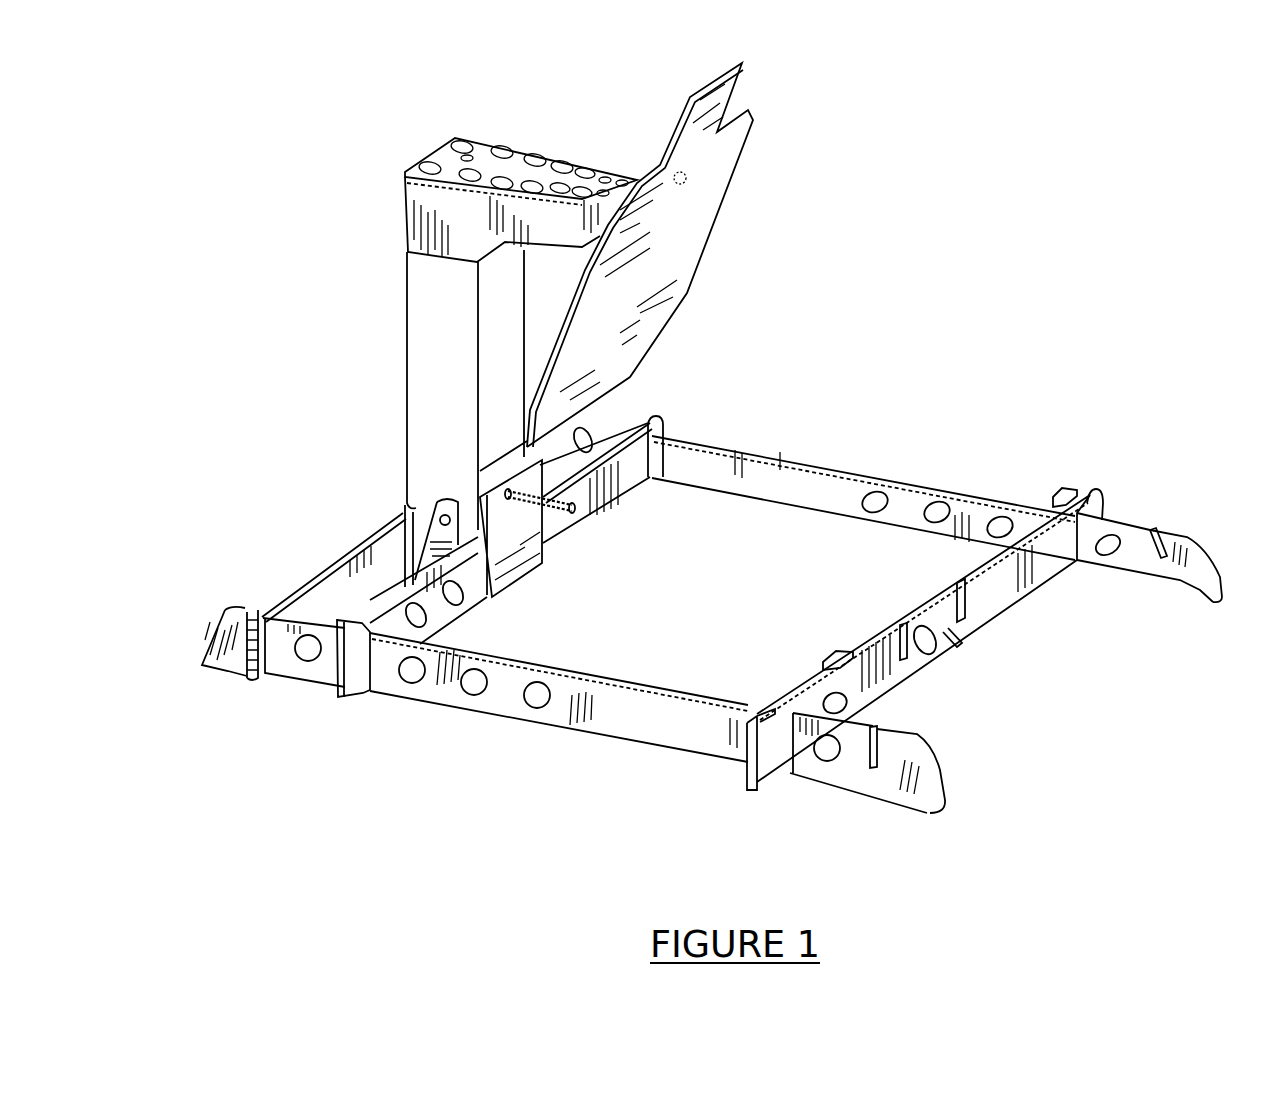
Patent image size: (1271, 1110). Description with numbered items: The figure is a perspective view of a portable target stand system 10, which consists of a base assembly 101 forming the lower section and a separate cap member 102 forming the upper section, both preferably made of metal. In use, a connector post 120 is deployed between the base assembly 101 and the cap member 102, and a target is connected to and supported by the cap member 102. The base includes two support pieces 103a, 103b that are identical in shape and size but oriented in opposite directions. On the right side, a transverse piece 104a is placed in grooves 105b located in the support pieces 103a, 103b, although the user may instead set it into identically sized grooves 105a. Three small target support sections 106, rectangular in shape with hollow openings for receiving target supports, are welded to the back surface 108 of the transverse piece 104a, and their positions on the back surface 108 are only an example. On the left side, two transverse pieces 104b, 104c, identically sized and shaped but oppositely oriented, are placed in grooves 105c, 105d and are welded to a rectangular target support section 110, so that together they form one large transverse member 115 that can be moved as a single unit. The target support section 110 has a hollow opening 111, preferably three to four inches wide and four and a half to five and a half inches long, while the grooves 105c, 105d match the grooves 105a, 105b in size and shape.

The portable target stand system 10 is at (1030, 749).
The base assembly 101 is at (1007, 668).
The cap member 102 is at (500, 165).
The support piece 103a is at (642, 707).
The support piece 103b is at (810, 463).
The transverse piece 104a is at (1017, 573).
The transverse piece 104b is at (603, 487).
The transverse piece 104c is at (327, 570).
The grooves 105a is at (880, 755).
The grooves 105b is at (793, 740).
The grooves 105c is at (375, 688).
The grooves 105d is at (276, 648).
The target support sections 106 is at (747, 727).
The back surface 108 is at (870, 635).
The target support section 110 is at (514, 531).
The hollow opening 111 is at (405, 505).
The transverse member 115 is at (373, 533).
The connector post 120 is at (467, 459).